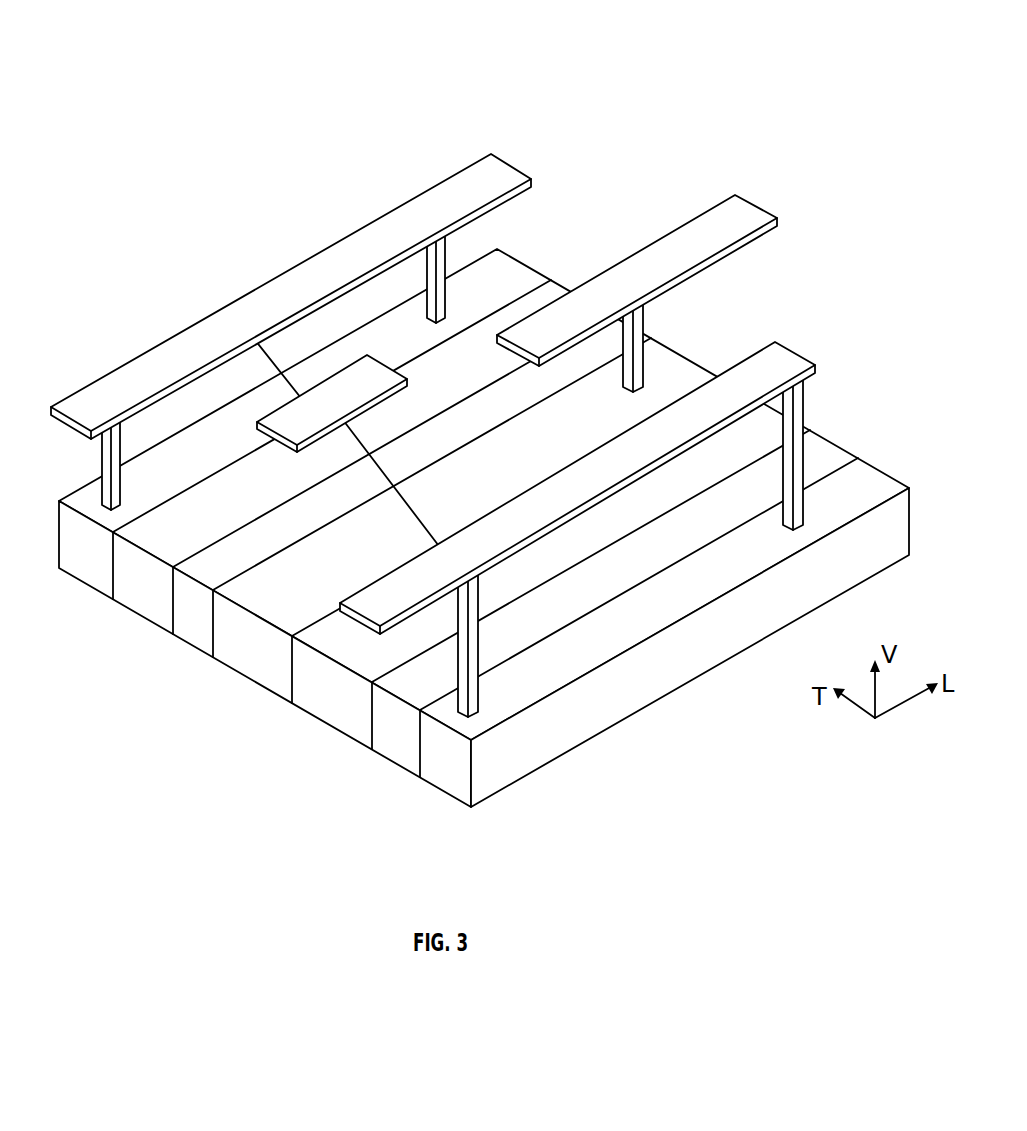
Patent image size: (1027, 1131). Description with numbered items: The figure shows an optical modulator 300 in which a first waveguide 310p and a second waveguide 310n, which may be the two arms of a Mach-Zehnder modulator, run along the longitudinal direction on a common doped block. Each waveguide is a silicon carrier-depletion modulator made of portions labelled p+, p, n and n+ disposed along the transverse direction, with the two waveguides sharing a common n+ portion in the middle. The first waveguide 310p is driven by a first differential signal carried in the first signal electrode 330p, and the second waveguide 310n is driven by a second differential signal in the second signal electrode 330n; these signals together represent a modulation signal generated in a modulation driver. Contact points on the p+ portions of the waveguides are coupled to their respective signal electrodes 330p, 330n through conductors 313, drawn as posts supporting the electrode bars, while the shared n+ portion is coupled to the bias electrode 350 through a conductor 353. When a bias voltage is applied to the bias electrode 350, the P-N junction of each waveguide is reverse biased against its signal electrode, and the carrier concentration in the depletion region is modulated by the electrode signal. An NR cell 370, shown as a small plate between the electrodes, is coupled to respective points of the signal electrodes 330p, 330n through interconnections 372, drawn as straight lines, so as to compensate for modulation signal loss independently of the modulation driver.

The optical modulator 300 is at (188, 72).
The second waveguide 310n is at (205, 680).
The first waveguide 310p is at (460, 830).
The conductor 313 is at (107, 462).
The second signal electrode 330n is at (187, 343).
The first signal electrode 330p is at (780, 358).
The bias electrode 350 is at (657, 255).
The conductor 353 is at (637, 375).
The NR cell 370 is at (327, 392).
The interconnection 372 is at (383, 477).